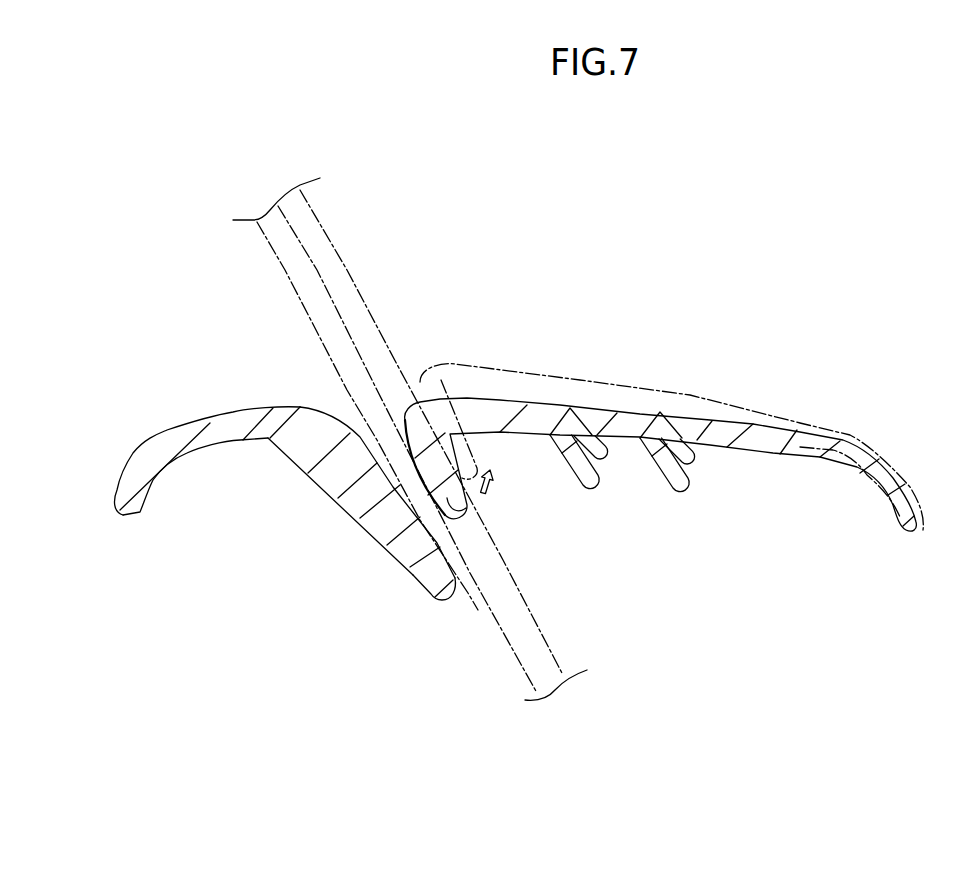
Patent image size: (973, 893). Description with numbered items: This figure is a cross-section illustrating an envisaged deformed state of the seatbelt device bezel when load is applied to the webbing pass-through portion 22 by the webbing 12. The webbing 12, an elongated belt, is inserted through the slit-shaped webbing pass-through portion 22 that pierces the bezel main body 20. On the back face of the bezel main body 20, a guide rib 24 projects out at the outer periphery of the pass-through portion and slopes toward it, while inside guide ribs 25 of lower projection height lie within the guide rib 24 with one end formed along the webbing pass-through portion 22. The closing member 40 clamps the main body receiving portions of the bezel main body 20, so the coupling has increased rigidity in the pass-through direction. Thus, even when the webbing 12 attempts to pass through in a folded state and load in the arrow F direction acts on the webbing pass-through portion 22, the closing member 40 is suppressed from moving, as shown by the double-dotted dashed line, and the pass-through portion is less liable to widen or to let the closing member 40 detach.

The webbing 12 is at (330, 239).
The bezel main body 20 is at (153, 440).
The webbing pass-through portion 22 is at (343, 408).
The guide rib 24 is at (413, 578).
The inside guide ribs 25 is at (463, 510).
The closing member 40 is at (503, 392).
The arrow F direction F is at (492, 488).